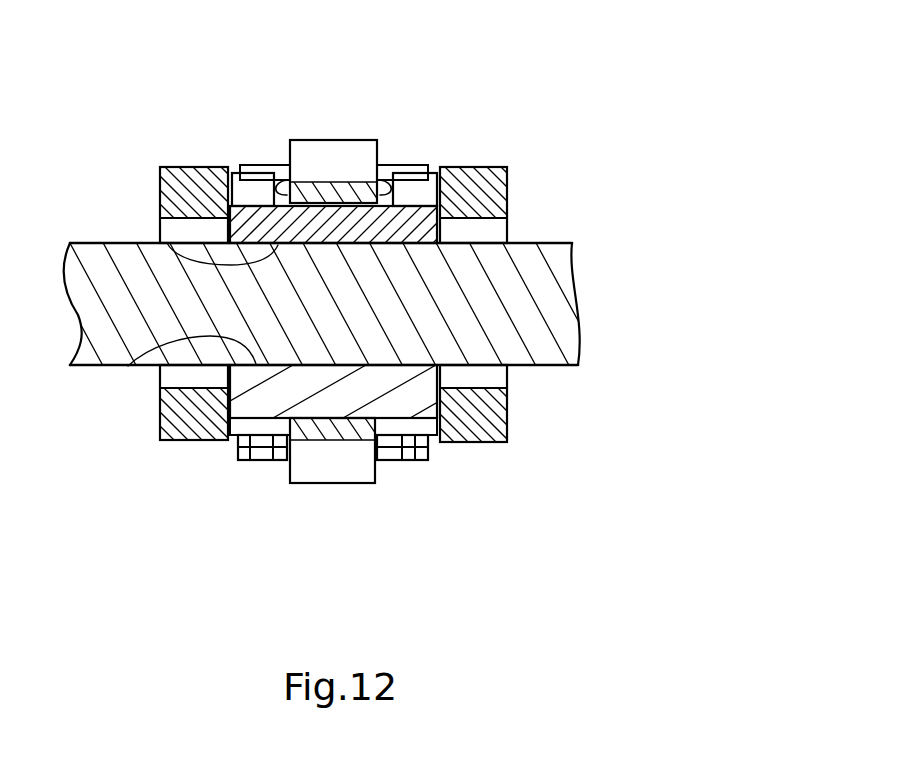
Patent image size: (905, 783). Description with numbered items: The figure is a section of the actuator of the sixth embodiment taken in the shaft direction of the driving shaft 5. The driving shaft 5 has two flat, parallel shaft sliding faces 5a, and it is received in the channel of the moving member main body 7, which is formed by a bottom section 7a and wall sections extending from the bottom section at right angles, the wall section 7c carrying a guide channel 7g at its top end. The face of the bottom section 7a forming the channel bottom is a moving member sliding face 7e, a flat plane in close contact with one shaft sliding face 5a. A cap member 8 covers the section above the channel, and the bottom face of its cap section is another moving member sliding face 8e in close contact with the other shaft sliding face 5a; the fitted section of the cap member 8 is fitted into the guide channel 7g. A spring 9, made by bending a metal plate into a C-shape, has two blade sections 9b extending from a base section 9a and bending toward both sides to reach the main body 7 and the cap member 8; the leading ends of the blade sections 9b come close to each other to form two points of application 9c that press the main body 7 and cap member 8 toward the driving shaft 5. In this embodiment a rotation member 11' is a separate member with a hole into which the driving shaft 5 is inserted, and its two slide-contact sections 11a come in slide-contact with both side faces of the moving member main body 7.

The driving shaft 5 is at (533, 367).
The shaft sliding face 5a is at (527, 243).
The moving member main body 7 is at (278, 437).
The bottom section 7a is at (247, 461).
The wall section 7c is at (239, 165).
The moving member sliding face 7e is at (128, 366).
The guide channel 7g is at (282, 178).
The cap member 8 is at (468, 167).
The moving member sliding face 8e is at (167, 243).
The spring 9 is at (337, 141).
The base section 9a is at (239, 164).
The blade section 9b is at (313, 140).
The point of application 9c is at (352, 182).
The rotation member 11' is at (197, 223).
The slide-contact section 11a is at (166, 164).